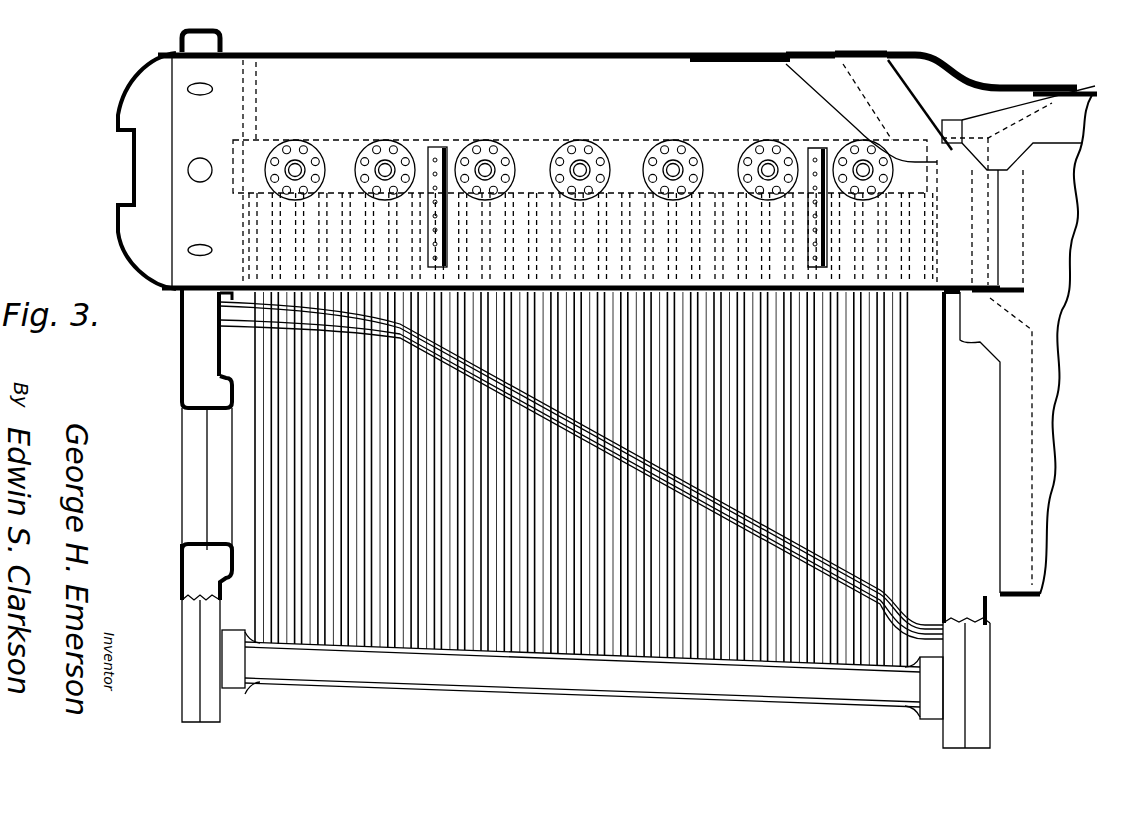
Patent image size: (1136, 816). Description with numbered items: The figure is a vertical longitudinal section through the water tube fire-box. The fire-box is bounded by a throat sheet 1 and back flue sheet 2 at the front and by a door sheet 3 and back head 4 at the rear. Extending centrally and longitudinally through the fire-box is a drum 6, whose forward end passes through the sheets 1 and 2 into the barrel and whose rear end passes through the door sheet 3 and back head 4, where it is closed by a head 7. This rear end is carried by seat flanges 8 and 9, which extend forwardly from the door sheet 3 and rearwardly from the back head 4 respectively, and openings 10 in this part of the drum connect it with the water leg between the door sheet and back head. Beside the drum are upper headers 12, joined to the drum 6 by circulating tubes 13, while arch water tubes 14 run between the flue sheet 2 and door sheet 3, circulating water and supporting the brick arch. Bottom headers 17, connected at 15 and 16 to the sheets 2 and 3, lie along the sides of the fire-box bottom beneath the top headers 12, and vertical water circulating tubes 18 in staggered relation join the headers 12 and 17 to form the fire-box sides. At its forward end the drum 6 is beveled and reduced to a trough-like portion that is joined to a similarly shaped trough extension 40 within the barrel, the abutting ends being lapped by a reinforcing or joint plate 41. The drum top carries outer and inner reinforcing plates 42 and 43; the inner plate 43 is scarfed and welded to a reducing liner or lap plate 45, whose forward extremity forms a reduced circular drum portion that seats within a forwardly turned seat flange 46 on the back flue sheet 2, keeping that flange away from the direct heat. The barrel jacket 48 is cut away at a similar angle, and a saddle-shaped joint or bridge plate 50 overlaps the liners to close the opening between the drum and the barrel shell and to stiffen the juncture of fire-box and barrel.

The throat sheet 1 is at (992, 663).
The back flue sheet 2 is at (941, 465).
The door sheet 3 is at (222, 360).
The back head 4 is at (189, 349).
The drum 6 is at (554, 62).
The head 7 is at (126, 97).
The seat flange 8 is at (226, 300).
The seat flange 9 is at (170, 294).
The openings 10 is at (204, 92).
The upper headers 12 is at (375, 138).
The circulating tubes 13 is at (296, 168).
The arch water tubes 14 is at (782, 555).
The connection 15 is at (928, 714).
The connection 16 is at (233, 690).
The bottom headers 17 is at (582, 692).
The vertical water circulating tubes 18 is at (262, 485).
The trough extension 40 is at (1062, 196).
The reinforcing or joint plate 41 is at (1010, 300).
The outer reinforcing plate 42 is at (782, 42).
The inner reinforcing plate 43 is at (728, 60).
The reducing liner or lap plate 45 is at (824, 76).
The seat flange 46 is at (954, 298).
The barrel jacket 48 is at (1094, 91).
The joint or bridge plate 50 is at (967, 70).